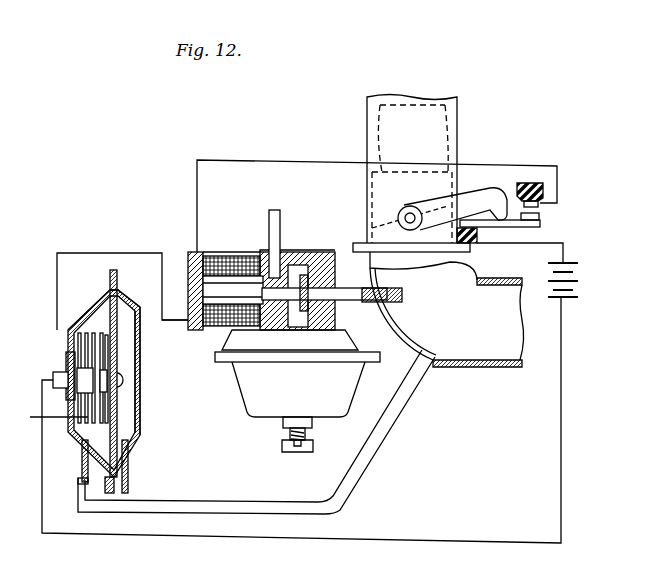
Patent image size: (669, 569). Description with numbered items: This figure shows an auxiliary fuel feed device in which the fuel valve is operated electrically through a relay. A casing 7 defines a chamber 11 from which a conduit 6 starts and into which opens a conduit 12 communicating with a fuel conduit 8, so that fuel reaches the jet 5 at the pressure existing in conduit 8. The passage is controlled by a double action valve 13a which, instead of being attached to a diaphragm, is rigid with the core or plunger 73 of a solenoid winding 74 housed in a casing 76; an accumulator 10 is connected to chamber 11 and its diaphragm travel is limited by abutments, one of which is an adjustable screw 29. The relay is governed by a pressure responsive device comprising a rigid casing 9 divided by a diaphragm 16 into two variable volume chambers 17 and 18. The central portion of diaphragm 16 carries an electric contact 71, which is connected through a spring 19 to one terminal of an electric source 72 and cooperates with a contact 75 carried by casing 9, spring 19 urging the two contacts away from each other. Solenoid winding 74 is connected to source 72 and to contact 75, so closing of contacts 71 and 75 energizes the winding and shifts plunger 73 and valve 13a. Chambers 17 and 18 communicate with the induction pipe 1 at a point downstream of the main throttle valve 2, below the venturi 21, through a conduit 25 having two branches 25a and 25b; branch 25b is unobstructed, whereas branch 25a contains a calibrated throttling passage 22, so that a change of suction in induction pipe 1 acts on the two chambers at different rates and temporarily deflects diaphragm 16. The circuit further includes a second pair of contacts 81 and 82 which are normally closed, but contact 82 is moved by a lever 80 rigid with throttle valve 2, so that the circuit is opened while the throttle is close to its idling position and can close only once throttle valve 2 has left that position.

The induction pipe 1 is at (480, 283).
The main throttle valve 2 is at (410, 215).
The jet 5 is at (402, 295).
The conduit 6 is at (313, 298).
The casing 7 is at (333, 255).
The conduit 8 is at (277, 232).
The rigid casing 9 is at (140, 401).
The accumulator 10 is at (248, 396).
The chamber 11 is at (300, 263).
The conduit 12 is at (255, 323).
The double action valve 13a is at (345, 320).
The diaphragm 16 is at (114, 448).
The variable volume chamber 17 is at (92, 320).
The variable volume chamber 18 is at (128, 337).
The spring 19 is at (49, 418).
The venturi 21 is at (445, 128).
The calibrated throttling passage 22 is at (80, 474).
The conduit 25 is at (357, 472).
The conduit branch 25a is at (82, 452).
The conduit branch 25b is at (130, 475).
The adjustable abutment screw 29 is at (284, 436).
The electric contact 71 is at (104, 376).
The electric source 72 is at (568, 282).
The solenoid plunger 73 is at (192, 257).
The solenoid winding 74 is at (252, 258).
The contact 75 is at (62, 377).
The solenoid casing 76 is at (188, 292).
The lever 80 is at (466, 198).
The contact 81 is at (544, 204).
The movable contact 82 is at (540, 220).